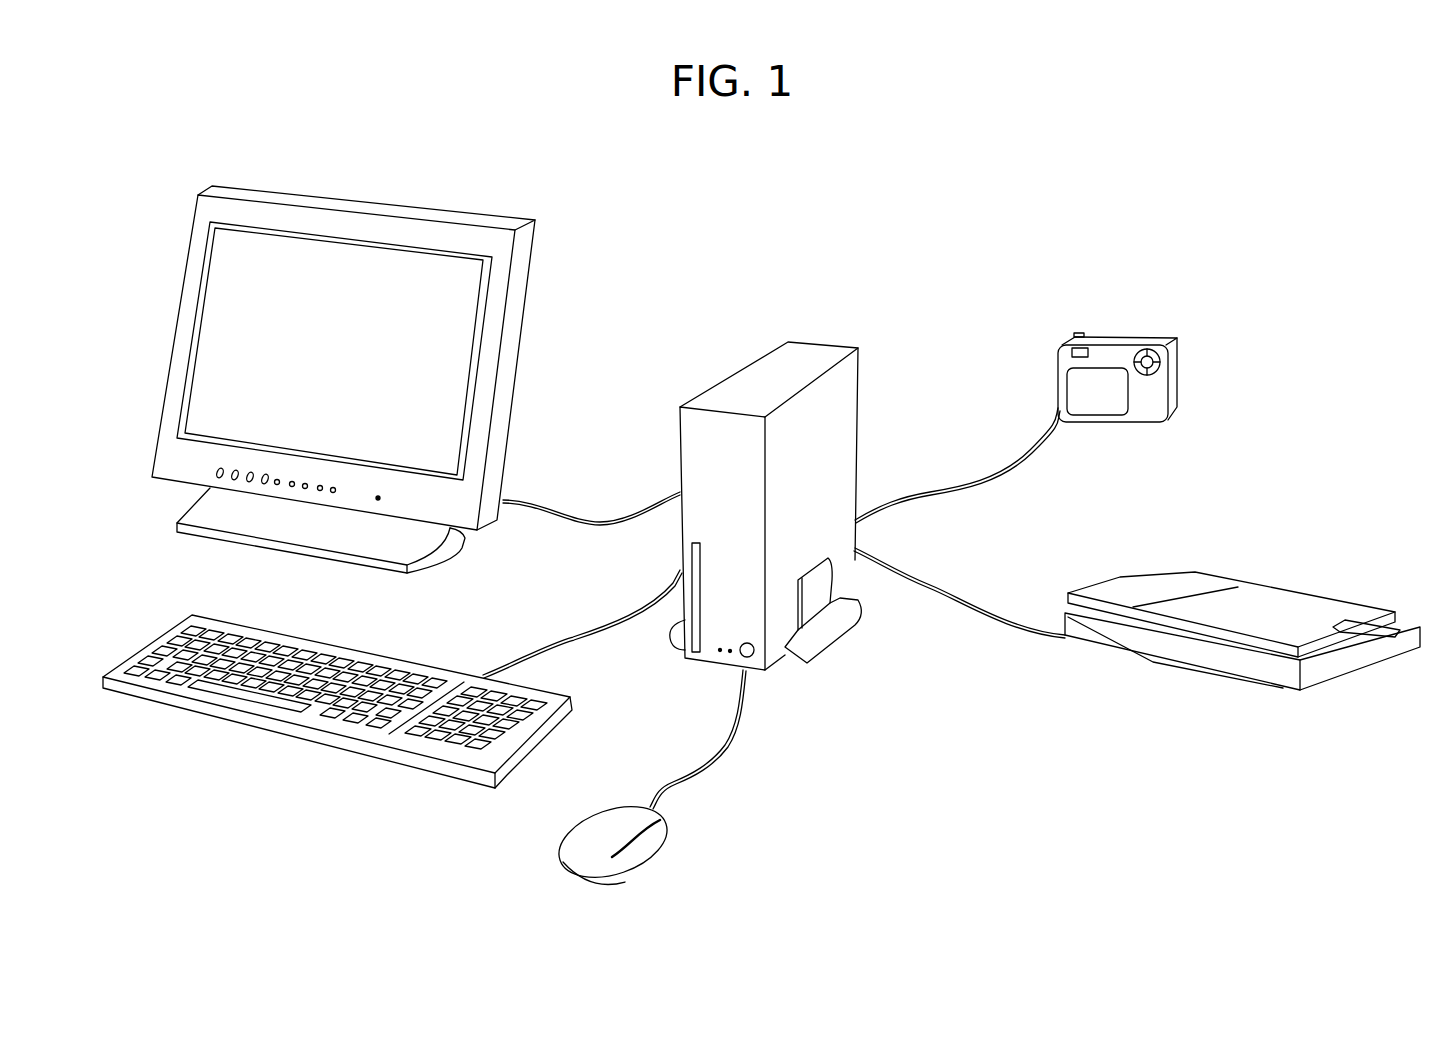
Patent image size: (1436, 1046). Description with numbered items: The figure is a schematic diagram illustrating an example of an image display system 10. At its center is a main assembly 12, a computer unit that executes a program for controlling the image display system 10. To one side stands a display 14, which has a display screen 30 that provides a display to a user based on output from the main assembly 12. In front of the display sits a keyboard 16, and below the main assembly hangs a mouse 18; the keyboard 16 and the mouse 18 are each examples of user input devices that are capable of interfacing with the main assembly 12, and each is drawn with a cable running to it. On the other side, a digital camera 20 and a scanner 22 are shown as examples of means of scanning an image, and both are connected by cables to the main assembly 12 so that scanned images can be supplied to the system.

The image display system 10 is at (826, 186).
The main assembly 12 is at (823, 342).
The display 14 is at (321, 353).
The keyboard 16 is at (438, 667).
The mouse 18 is at (668, 832).
The digital camera 20 is at (1117, 335).
The scanner 22 is at (1232, 582).
The display screen 30 is at (217, 308).